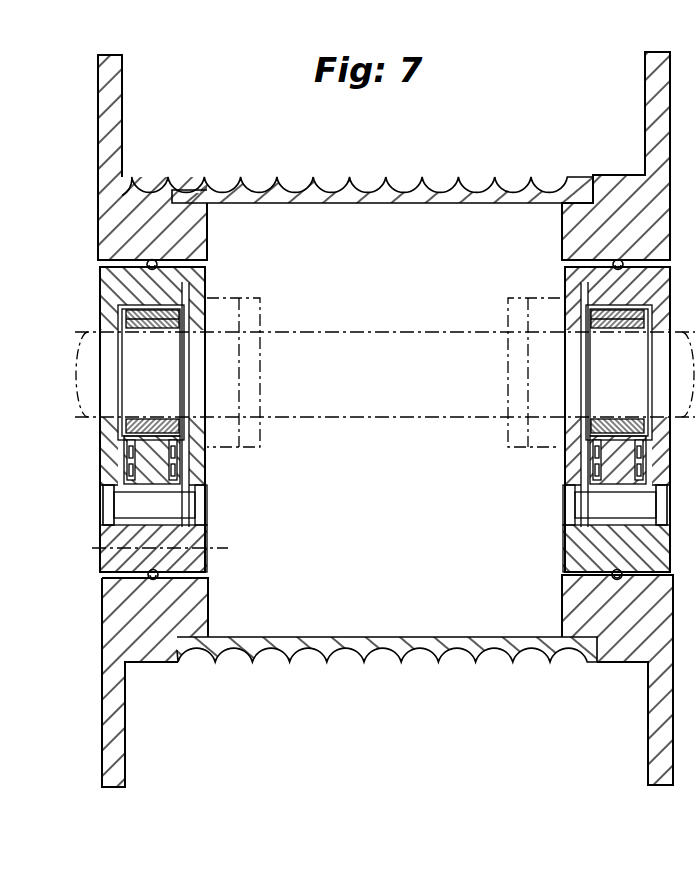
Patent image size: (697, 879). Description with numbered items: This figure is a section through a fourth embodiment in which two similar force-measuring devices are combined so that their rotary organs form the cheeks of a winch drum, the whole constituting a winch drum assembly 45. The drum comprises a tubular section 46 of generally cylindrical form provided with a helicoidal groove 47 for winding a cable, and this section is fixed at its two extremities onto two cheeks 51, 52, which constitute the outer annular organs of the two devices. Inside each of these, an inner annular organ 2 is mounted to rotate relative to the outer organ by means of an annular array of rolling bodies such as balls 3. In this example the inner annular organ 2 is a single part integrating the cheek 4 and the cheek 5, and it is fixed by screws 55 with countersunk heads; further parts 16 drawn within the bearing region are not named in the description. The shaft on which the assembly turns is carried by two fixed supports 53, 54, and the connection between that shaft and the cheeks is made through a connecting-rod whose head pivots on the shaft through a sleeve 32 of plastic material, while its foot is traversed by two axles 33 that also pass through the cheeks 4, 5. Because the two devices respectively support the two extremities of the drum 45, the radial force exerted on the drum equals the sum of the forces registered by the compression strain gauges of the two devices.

The inner annular organ 2 is at (162, 285).
The balls 3 is at (150, 262).
The cheek 4 is at (107, 455).
The cheek 5 is at (177, 440).
The sealing lips 16 is at (128, 470).
The sleeve 32 is at (166, 332).
The axles 33 is at (122, 508).
The winch drum assembly 45 is at (357, 159).
The tubular section 46 is at (355, 195).
The helicoidal groove 47 is at (468, 187).
The cheek 51 is at (116, 86).
The cheek 52 is at (653, 104).
The fixed support 53 is at (230, 303).
The fixed support 54 is at (541, 303).
The screws 55 is at (225, 548).